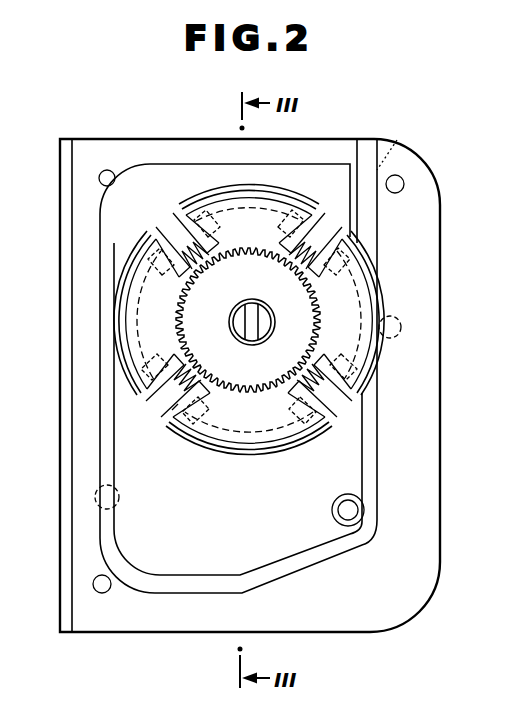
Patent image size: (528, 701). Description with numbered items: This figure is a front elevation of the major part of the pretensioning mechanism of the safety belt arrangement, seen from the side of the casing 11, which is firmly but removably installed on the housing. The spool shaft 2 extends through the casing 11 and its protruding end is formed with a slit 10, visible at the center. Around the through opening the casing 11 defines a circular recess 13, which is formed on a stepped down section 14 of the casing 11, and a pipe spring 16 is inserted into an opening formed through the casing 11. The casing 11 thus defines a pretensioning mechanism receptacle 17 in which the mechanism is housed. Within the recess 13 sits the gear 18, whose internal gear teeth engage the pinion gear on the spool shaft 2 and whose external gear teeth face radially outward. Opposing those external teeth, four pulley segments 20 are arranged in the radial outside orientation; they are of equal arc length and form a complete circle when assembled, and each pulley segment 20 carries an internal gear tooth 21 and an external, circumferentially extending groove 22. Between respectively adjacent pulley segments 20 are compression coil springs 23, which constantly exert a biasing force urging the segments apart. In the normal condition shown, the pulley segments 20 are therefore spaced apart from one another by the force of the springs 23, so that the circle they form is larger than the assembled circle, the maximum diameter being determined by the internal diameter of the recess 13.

The spool shaft 2 is at (240, 343).
The slit 10 is at (242, 304).
The casing 11 is at (418, 236).
The recess 13 is at (172, 410).
The stepped down section 14 is at (373, 473).
The pipe spring 16 is at (360, 516).
The pretensioning mechanism receptacle 17 is at (193, 178).
The gear 18 is at (303, 342).
The pulley segments 20 is at (269, 215).
The internal gear tooth 21 is at (323, 330).
The external and circumferentially extending groove 22 is at (398, 144).
The compression coil springs 23 is at (317, 257).